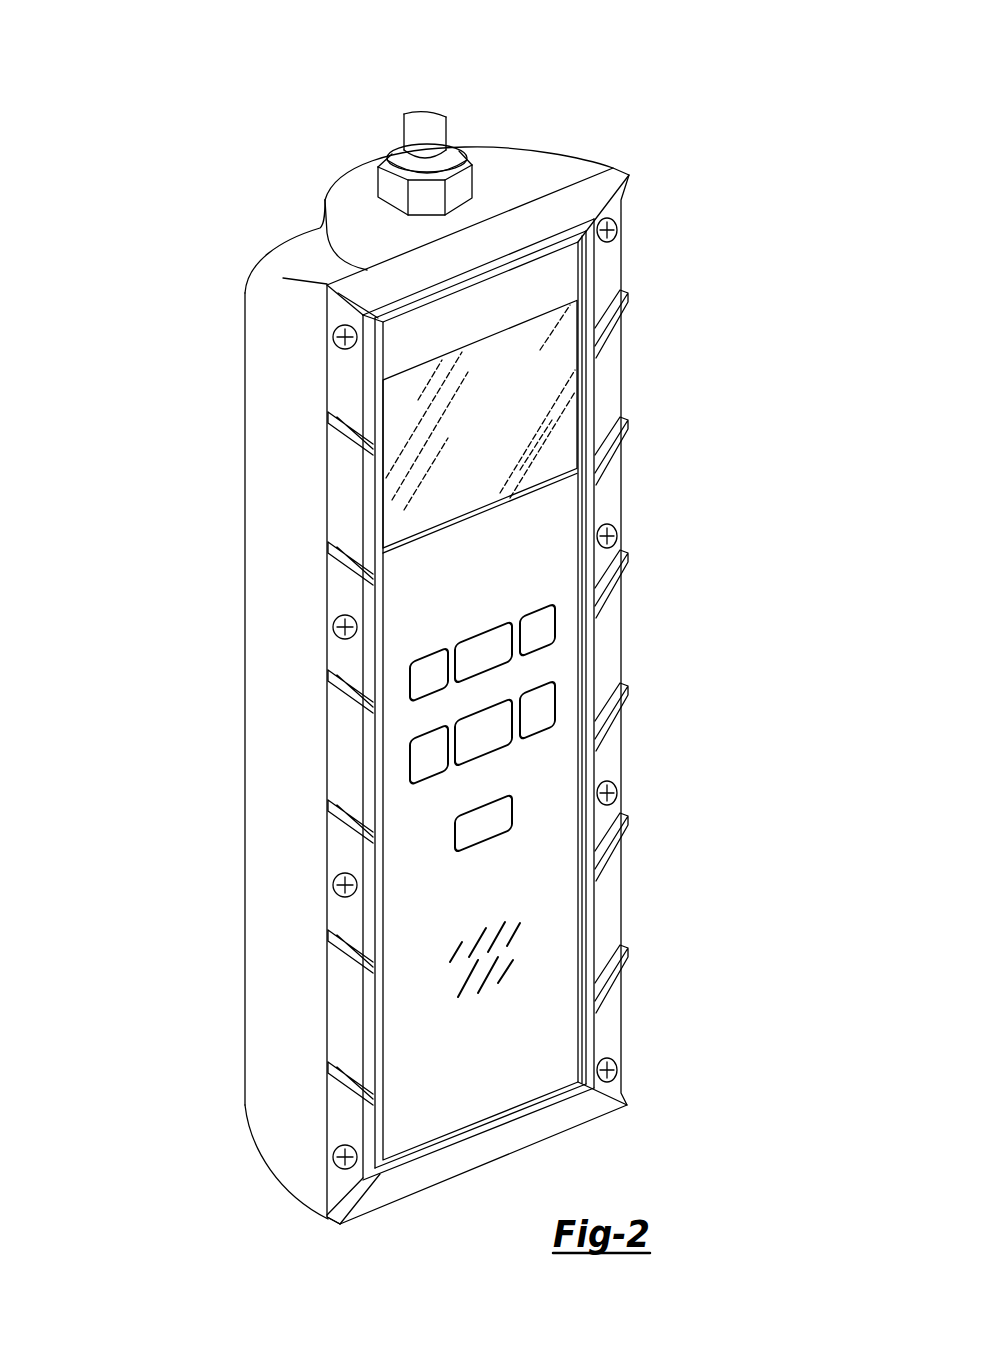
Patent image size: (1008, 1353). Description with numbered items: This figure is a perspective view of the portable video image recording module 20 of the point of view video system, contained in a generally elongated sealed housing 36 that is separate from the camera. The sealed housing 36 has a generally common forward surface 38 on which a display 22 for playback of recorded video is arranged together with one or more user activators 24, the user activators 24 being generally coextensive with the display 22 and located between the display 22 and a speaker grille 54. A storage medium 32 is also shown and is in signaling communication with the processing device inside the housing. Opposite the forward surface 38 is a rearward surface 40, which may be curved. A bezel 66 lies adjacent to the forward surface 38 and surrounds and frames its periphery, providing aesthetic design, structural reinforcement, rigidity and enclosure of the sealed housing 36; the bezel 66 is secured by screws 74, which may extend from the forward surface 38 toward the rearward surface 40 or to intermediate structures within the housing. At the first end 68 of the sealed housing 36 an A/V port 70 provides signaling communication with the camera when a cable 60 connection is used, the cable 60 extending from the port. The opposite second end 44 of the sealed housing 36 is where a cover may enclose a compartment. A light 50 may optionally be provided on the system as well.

The portable video image recording module 20 is at (448, 631).
The display 22 is at (480, 435).
The user activators 24 is at (410, 740).
The storage medium 32 is at (500, 818).
The sealed housing 36 is at (270, 548).
The forward surface 38 is at (445, 1087).
The rearward surface 40 is at (250, 1010).
The end 44 is at (275, 1214).
The light 50 is at (398, 345).
The speaker grille 54 is at (515, 940).
The cable 60 is at (428, 114).
The bezel 66 is at (343, 762).
The first end 68 is at (645, 156).
The A/V port 70 is at (485, 188).
The screws 74 is at (609, 535).